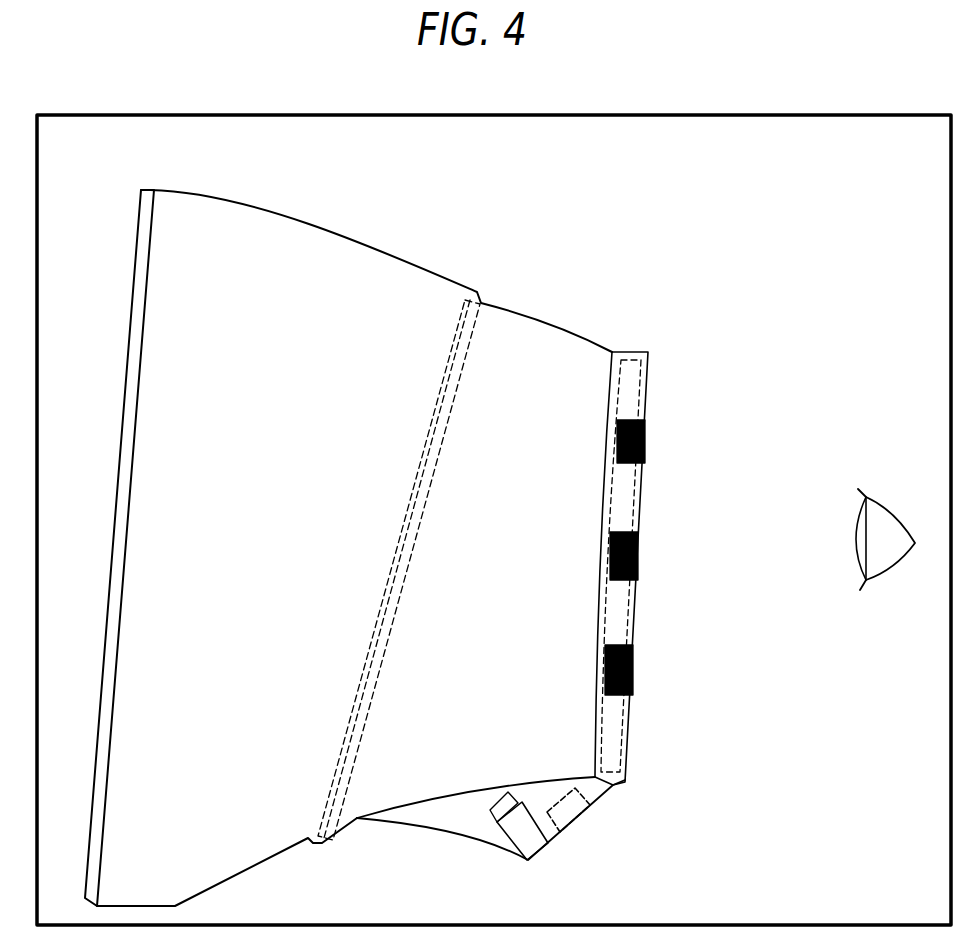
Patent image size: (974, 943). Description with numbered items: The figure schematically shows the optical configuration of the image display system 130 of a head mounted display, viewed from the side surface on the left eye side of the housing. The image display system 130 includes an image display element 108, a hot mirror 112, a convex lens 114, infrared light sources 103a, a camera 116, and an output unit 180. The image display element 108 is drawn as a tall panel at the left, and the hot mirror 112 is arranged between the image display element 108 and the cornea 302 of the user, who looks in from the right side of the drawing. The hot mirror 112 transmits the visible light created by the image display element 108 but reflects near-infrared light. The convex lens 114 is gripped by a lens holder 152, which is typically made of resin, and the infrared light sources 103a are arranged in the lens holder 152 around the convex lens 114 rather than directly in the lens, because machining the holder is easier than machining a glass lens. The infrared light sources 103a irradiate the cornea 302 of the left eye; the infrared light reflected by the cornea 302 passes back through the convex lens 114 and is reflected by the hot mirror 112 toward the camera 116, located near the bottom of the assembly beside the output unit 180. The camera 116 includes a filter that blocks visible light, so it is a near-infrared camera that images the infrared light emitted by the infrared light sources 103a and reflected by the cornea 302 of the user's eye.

The image display element 108 is at (153, 190).
The image display system 130 is at (337, 231).
The hot mirror 112 is at (477, 290).
The convex lens 114 is at (637, 350).
The infrared light sources 103a is at (645, 447).
The lens holder 152 is at (627, 787).
The camera 116 is at (558, 853).
The output unit 180 is at (580, 823).
The cornea 302 is at (862, 592).